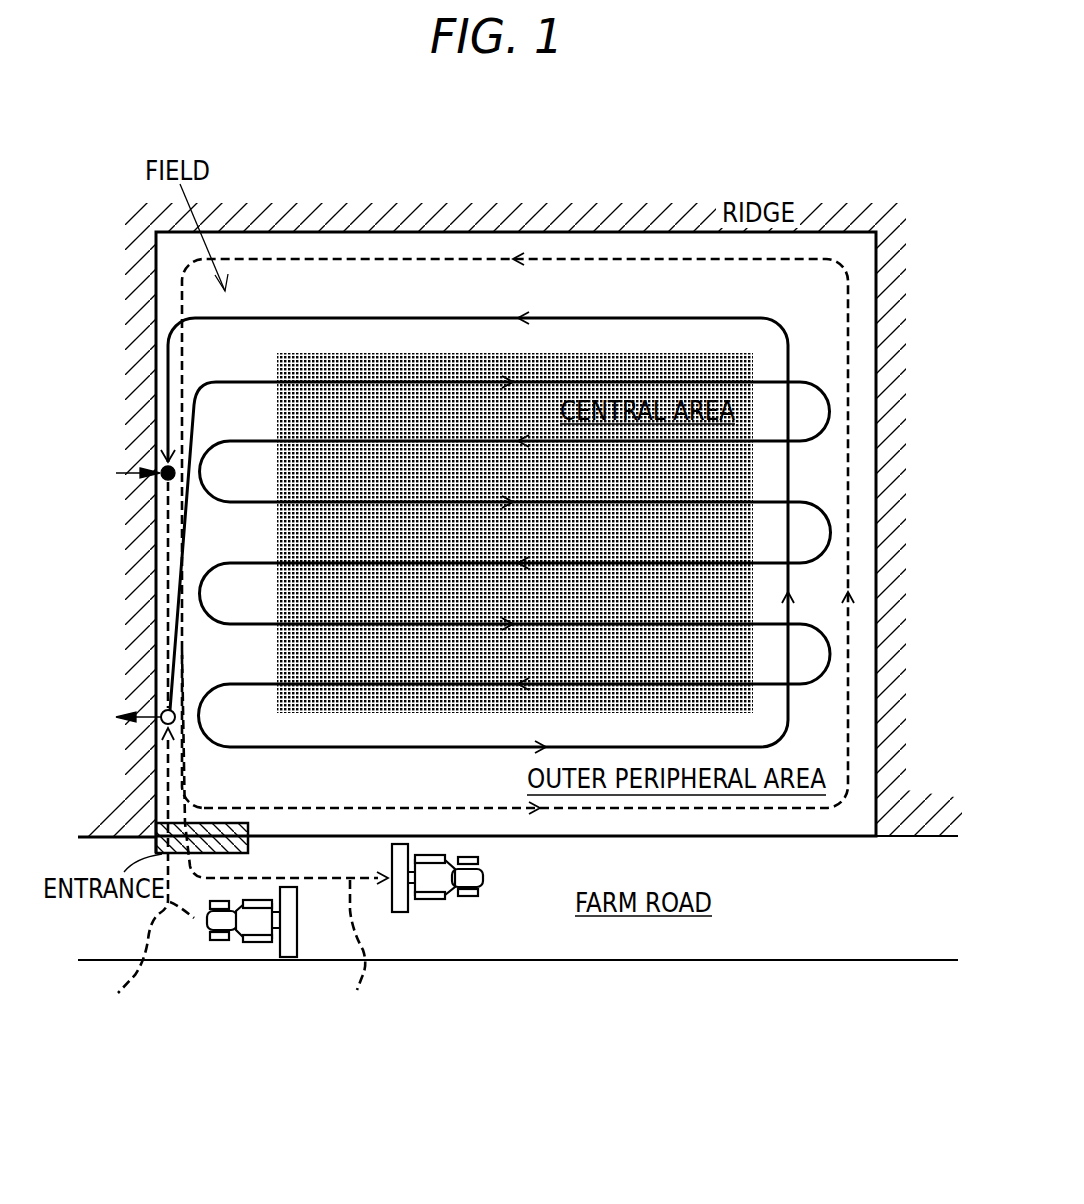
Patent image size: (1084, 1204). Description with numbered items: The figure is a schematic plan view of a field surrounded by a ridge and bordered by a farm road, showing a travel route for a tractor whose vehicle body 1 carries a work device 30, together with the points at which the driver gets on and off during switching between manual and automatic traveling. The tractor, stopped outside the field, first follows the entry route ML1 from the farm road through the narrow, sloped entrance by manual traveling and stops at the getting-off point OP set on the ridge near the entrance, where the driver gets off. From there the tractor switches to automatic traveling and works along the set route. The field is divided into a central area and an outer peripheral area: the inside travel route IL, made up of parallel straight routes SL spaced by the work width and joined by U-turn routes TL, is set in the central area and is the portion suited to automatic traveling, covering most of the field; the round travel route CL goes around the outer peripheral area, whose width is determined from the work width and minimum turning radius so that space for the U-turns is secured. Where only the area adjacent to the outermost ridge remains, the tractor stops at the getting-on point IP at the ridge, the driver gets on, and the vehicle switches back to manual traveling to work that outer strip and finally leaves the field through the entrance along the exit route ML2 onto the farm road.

The vehicle body 1 is at (232, 941).
The work device 30 is at (288, 949).
The round travel route CL is at (166, 358).
The inside travel route IL is at (606, 376).
The straight route SL is at (416, 444).
The U-turn route TL is at (202, 582).
The getting-on point IP is at (160, 466).
The getting-off point OP is at (160, 712).
The entry route ML1 is at (131, 749).
The exit route ML2 is at (518, 637).